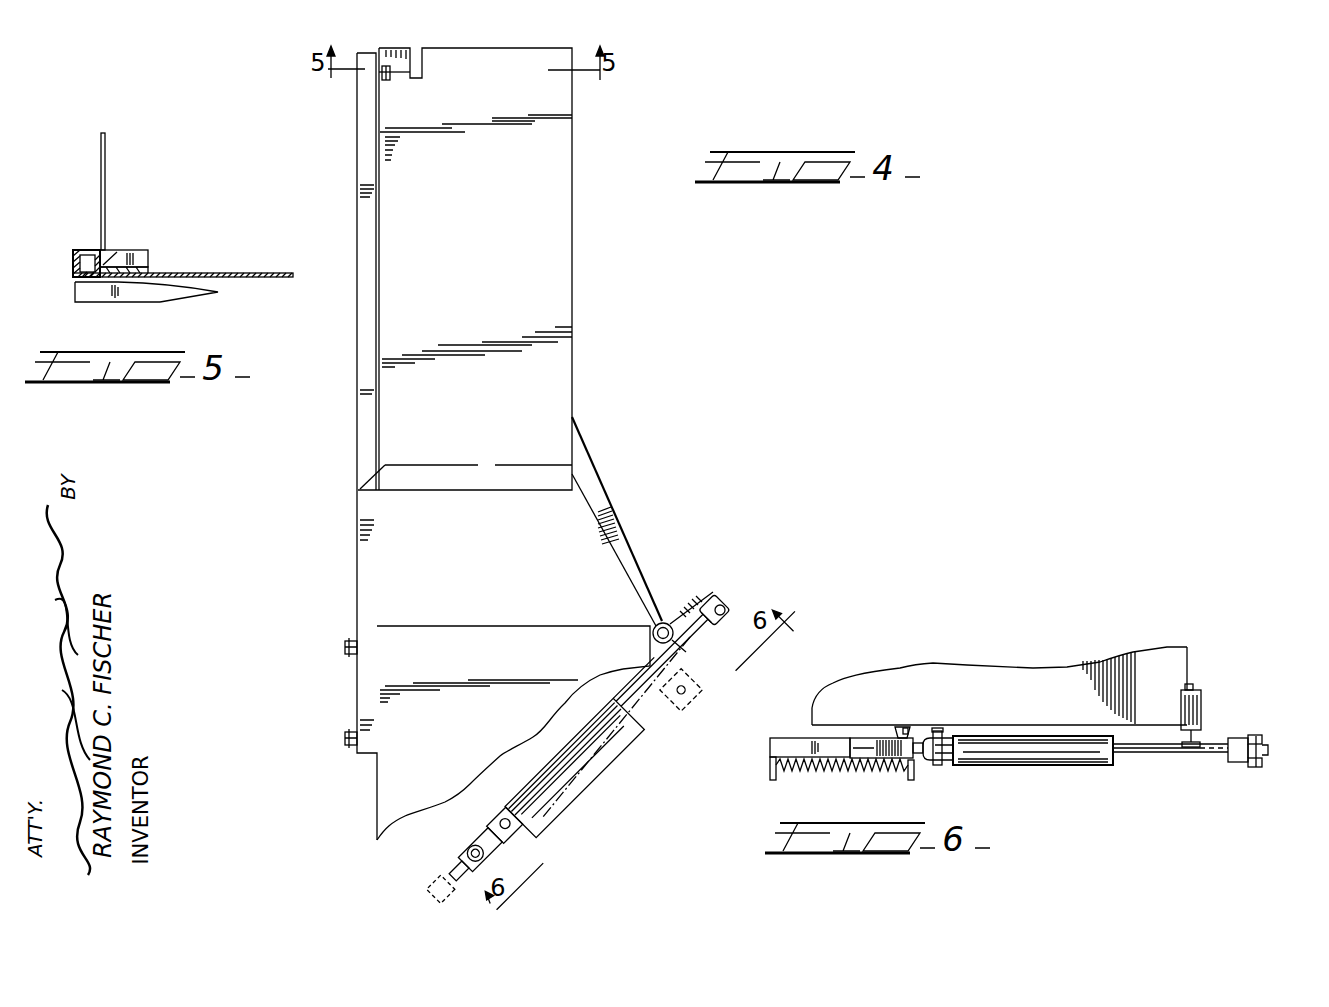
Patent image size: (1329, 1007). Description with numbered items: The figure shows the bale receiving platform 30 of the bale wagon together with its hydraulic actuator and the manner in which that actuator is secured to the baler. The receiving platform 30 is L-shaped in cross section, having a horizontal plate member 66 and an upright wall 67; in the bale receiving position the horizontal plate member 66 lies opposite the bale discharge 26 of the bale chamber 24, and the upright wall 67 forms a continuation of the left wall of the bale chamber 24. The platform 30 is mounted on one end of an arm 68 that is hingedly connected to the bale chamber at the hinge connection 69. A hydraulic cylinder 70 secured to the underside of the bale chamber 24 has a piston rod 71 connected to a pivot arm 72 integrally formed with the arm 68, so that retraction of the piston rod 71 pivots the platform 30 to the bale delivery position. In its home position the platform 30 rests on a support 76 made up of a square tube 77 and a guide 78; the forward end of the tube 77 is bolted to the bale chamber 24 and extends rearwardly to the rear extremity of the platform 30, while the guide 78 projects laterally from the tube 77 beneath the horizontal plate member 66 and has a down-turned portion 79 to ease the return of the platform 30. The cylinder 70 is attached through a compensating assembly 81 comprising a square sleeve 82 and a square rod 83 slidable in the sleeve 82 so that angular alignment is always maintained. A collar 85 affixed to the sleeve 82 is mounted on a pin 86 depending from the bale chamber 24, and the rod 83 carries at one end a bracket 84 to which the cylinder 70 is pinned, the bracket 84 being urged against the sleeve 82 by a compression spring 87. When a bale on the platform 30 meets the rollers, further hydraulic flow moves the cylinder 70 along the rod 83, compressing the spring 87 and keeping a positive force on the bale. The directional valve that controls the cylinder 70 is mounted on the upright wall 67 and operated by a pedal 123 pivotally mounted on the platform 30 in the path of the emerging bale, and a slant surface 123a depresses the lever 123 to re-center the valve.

In FIG. 4, the bale chamber 24 is at (453, 733).
In FIG. 6, the bale chamber 24 is at (1030, 688).
In FIG. 4, the bale discharge 26 is at (470, 626).
In FIG. 4, the bale receiving platform 30 is at (664, 302).
In FIG. 5, the bale receiving platform 30 is at (182, 190).
In FIG. 4, the horizontal plate member 66 is at (560, 272).
In FIG. 5, the horizontal plate member 66 is at (212, 274).
In FIG. 4, the upright wall 67 is at (380, 347).
In FIG. 5, the upright wall 67 is at (105, 182).
In FIG. 4, the arm 68 is at (603, 518).
In FIG. 4, the hinge connection 69 is at (668, 622).
In FIG. 6, the hinge connection 69 is at (1191, 684).
In FIG. 4, the hydraulic cylinder 70 is at (558, 778).
In FIG. 6, the hydraulic cylinder 70 is at (1028, 752).
In FIG. 4, the piston rod 71 is at (698, 634).
In FIG. 6, the piston rod 71 is at (1173, 756).
In FIG. 4, the pivot arm 72 is at (697, 600).
In FIG. 6, the pivot arm 72 is at (1264, 752).
In FIG. 5, the support 76 is at (68, 286).
In FIG. 4, the square tube 77 is at (355, 560).
In FIG. 5, the square tube 77 is at (82, 250).
In FIG. 5, the guide 78 is at (128, 292).
In FIG. 5, the down-turned portion 79 is at (218, 292).
In FIG. 6, the assembly 81 is at (919, 767).
In FIG. 6, the sleeve 82 is at (868, 752).
In FIG. 6, the rod 83 is at (787, 745).
In FIG. 6, the bracket 84 is at (940, 736).
In FIG. 6, the collar 85 is at (898, 727).
In FIG. 6, the pin 86 is at (908, 730).
In FIG. 6, the compression spring 87 is at (815, 772).
In FIG. 4, the pedal 123 is at (409, 52).
In FIG. 5, the pedal 123 is at (132, 263).
In FIG. 4, the slant surface 123a is at (390, 80).
In FIG. 5, the slant surface 123a is at (103, 251).